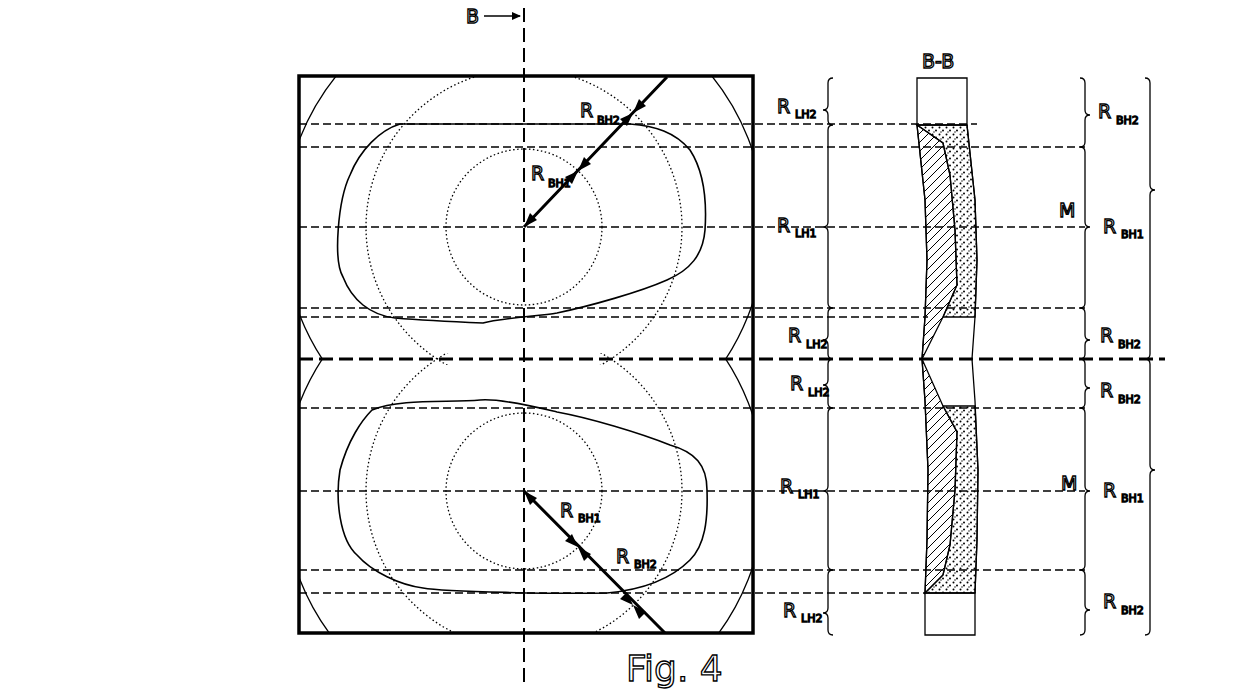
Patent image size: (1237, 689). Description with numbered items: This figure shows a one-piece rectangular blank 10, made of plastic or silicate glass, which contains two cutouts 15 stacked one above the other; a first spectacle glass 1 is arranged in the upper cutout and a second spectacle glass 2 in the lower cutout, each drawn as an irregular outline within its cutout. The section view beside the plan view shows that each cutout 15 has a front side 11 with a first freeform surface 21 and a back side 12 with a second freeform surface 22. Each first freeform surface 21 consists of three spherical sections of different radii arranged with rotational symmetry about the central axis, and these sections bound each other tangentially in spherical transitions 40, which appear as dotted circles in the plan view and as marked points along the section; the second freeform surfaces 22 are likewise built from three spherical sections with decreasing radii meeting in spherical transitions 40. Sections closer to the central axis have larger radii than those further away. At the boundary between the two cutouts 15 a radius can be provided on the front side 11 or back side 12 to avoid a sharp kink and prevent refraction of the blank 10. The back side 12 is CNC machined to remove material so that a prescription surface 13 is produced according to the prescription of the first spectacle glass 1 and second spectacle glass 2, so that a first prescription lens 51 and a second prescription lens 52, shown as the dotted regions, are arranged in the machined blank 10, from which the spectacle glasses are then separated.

The first spectacle glass 1 is at (418, 157).
The second spectacle glass 2 is at (423, 555).
The blank 10 is at (298, 357).
The front side 11 is at (1019, 318).
The first freeform surface 21 is at (968, 93).
The back side 12 is at (870, 316).
The second freeform surface 22 is at (915, 92).
The prescription surface 13 is at (952, 408).
The cutout 15 is at (317, 215).
The spherical transition 40 is at (603, 227).
The first prescription lens 51 is at (970, 195).
The second prescription lens 52 is at (967, 458).